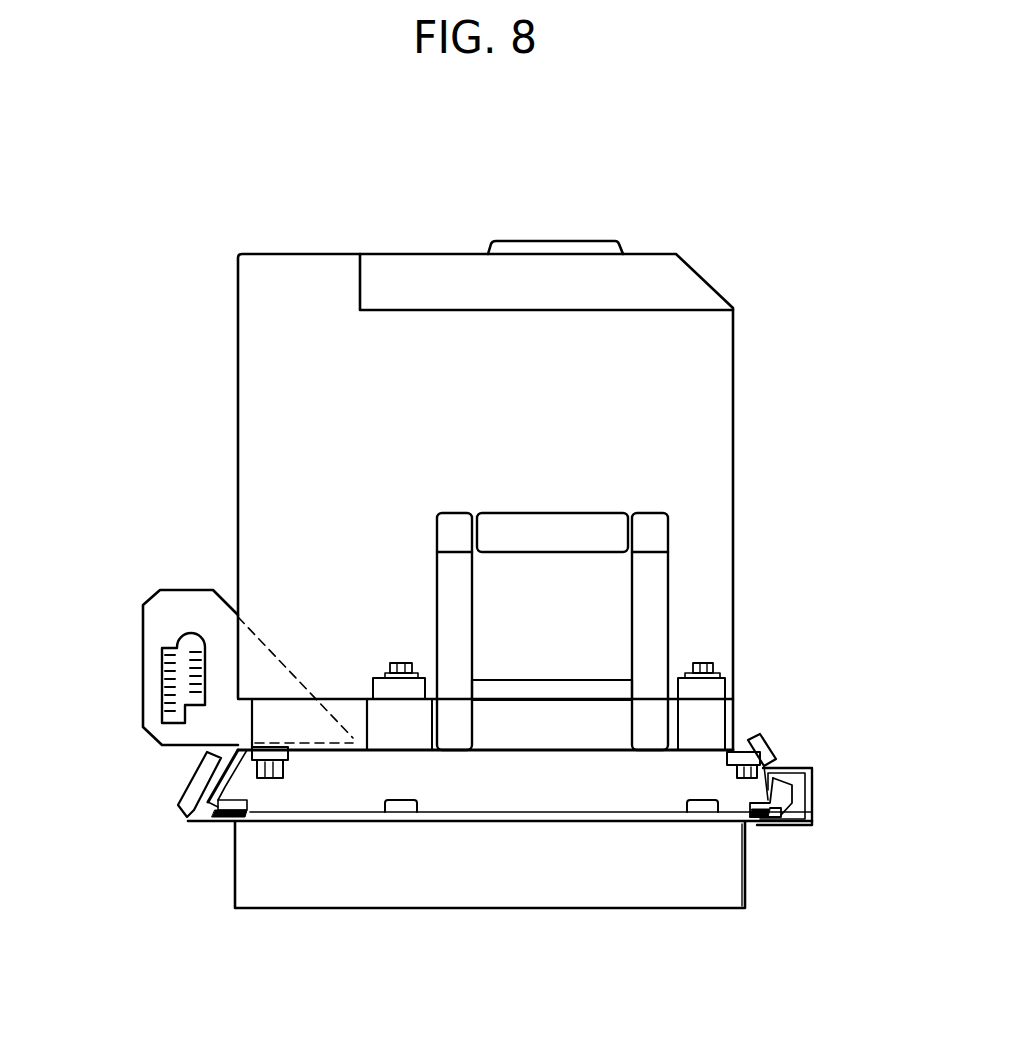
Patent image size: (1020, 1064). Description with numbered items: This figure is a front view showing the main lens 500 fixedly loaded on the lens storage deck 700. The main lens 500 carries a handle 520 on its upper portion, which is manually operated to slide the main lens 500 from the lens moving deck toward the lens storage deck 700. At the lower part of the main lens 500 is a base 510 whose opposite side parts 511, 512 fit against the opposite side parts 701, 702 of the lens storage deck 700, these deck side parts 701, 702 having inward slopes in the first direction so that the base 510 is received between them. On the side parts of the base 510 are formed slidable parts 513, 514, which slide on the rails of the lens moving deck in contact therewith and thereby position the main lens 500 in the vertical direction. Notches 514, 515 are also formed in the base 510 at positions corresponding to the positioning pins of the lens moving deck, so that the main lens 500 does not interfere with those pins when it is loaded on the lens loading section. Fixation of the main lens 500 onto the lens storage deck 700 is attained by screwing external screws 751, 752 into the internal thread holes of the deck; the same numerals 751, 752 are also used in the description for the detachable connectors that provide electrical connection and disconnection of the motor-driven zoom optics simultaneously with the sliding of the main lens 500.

The main lens 500 is at (733, 578).
The base 510 is at (577, 802).
The side part of the base 511 is at (233, 767).
The side part of the base 512 is at (748, 827).
The slidable part 513 is at (212, 820).
The slidable part 514 is at (398, 812).
The notch 515 is at (702, 812).
The handle 520 is at (585, 521).
The lens storage deck 700 is at (756, 895).
The side part of the lens storage deck 701 is at (203, 787).
The side part of the lens storage deck 702 is at (762, 750).
The external screw 751 is at (162, 678).
The external screw 752 is at (745, 785).